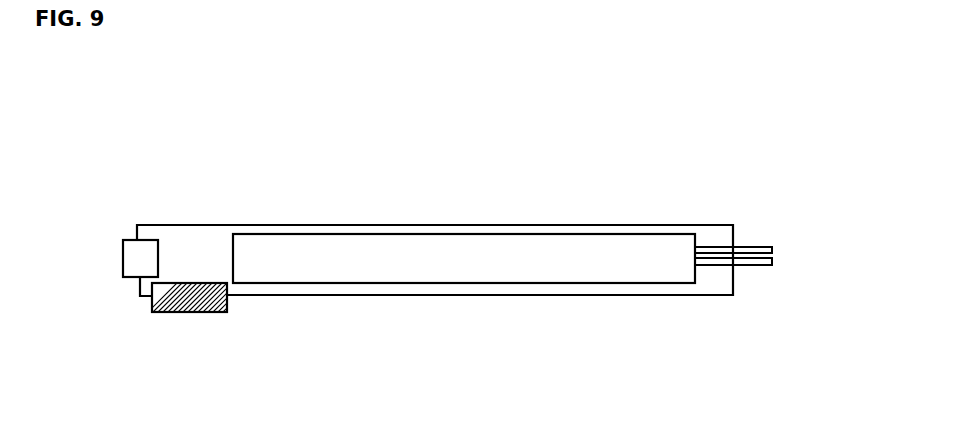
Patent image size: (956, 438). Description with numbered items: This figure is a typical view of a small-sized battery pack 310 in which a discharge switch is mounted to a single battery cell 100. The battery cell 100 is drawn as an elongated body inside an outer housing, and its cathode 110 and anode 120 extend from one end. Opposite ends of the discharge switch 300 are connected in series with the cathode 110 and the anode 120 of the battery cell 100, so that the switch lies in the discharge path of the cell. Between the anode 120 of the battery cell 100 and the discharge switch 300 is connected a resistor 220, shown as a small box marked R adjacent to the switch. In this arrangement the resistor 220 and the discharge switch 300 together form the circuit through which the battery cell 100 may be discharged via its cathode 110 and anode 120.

The battery pack 310 is at (68, 102).
The battery cell 100 is at (442, 218).
The cathode 110 is at (760, 267).
The anode 120 is at (760, 248).
The resistor 220 is at (125, 240).
The discharge switch 300 is at (183, 313).